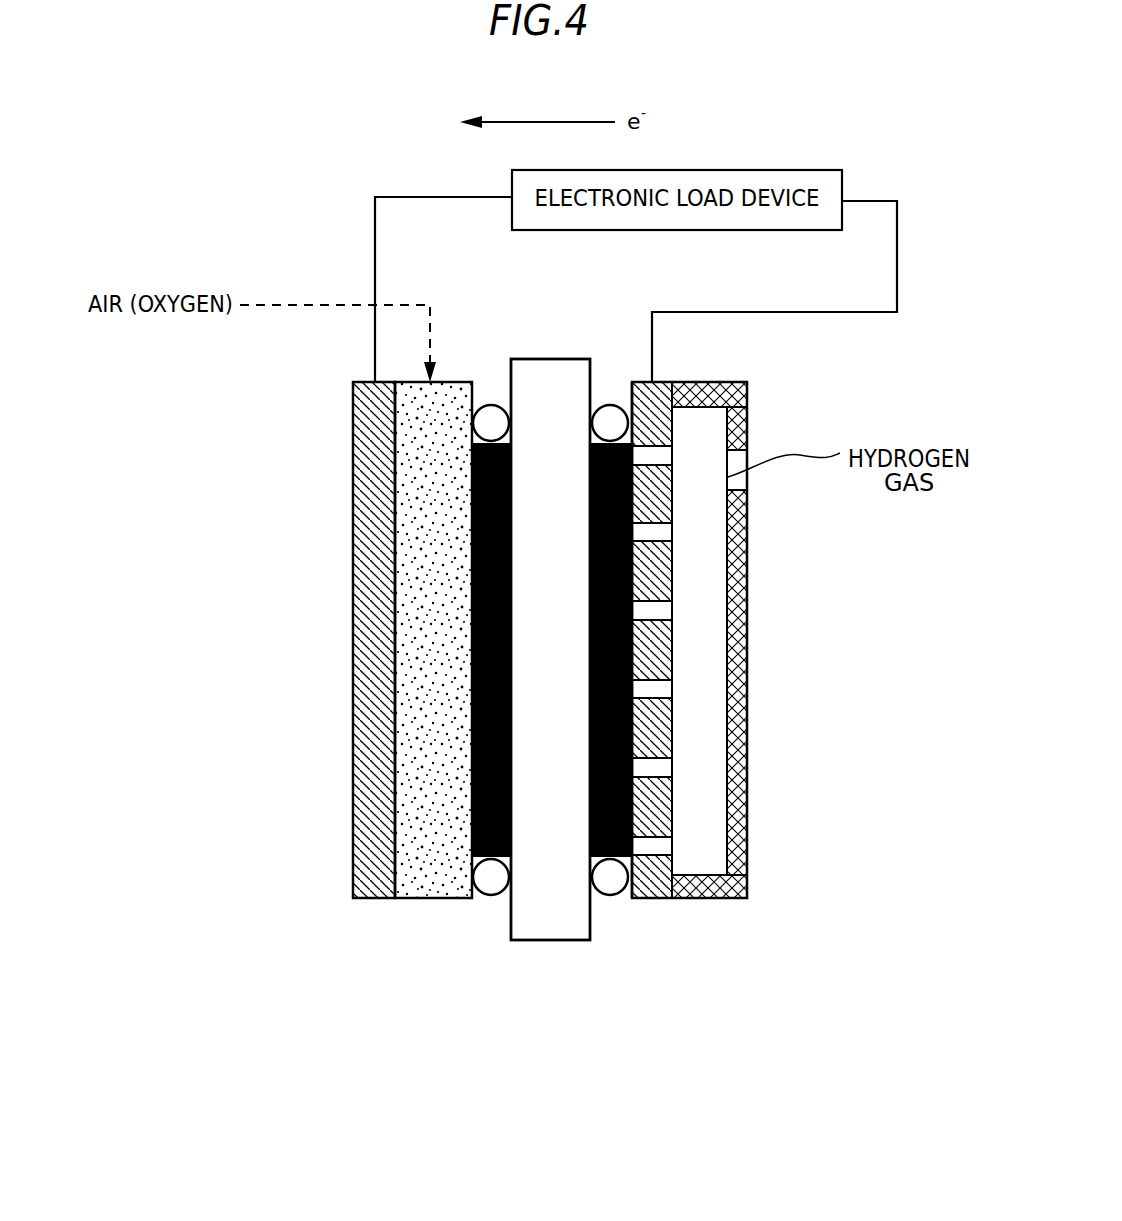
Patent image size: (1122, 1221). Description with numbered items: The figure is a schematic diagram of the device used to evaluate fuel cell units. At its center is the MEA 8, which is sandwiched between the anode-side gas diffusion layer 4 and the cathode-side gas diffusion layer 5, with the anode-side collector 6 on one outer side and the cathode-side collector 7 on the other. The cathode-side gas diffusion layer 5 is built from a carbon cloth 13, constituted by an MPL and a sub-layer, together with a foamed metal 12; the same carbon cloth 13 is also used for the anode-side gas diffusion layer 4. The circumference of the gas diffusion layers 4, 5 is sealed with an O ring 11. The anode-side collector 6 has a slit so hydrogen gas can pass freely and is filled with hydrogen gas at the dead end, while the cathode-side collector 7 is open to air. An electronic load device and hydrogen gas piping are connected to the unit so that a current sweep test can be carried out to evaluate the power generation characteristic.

The anode-side gas diffusion layer 4 is at (610, 858).
The cathode-side gas diffusion layer 5 is at (453, 742).
The anode-side collector 6 is at (645, 900).
The cathode-side collector 7 is at (370, 900).
The MEA 8 is at (550, 940).
The O ring 11 is at (489, 405).
The foamed metal 12 is at (427, 900).
The carbon cloth 13 is at (489, 858).